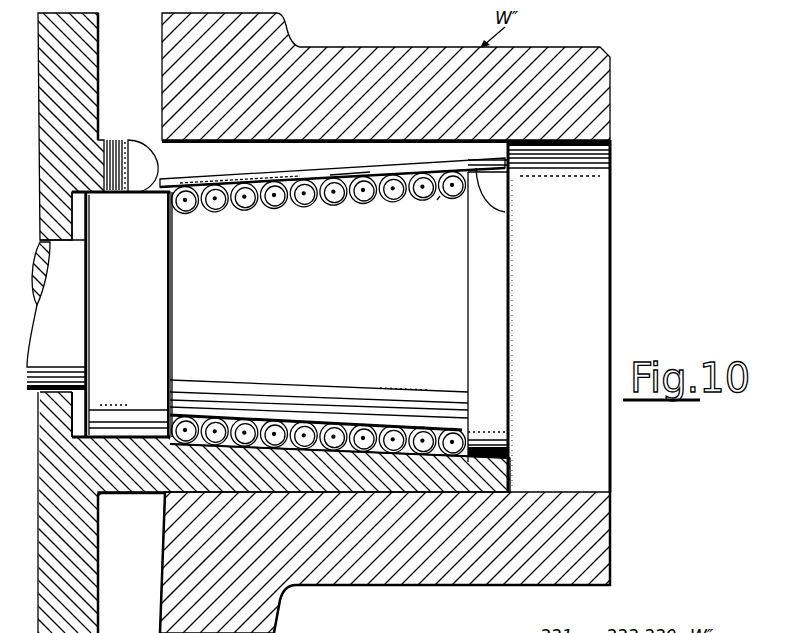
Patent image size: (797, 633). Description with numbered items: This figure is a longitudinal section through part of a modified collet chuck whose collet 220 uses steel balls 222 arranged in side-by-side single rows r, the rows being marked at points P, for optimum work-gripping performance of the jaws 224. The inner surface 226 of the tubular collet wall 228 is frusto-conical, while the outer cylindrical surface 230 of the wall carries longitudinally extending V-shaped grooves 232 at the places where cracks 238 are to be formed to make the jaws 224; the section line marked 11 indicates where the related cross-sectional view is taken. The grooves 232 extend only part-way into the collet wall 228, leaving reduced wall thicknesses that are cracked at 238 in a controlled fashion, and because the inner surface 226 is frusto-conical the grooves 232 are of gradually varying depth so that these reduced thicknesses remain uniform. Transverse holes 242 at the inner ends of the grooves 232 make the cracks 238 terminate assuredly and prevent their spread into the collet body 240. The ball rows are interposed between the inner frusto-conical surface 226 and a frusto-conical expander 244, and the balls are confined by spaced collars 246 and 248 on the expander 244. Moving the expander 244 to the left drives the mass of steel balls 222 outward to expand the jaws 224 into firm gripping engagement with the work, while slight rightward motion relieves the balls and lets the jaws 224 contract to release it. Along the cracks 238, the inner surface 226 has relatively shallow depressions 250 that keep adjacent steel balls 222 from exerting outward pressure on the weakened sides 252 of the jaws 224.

The collet 220 is at (104, 62).
The outer cylindrical surface 230 is at (160, 139).
The transverse holes 242 is at (133, 156).
The V-shaped grooves 232 is at (270, 167).
The section line 11 is at (335, 21).
The jaws 224 is at (497, 152).
The cracks 238 is at (505, 212).
The collar 248 is at (500, 284).
The frusto-conical expander 244 is at (352, 304).
The collar 246 is at (160, 325).
The steel balls 222 is at (333, 206).
The roller pressure points P is at (243, 202).
The shallow depressions 250 is at (350, 174).
The weakened sides 252 is at (438, 198).
The inner surface 226 is at (350, 424).
The tubular collet wall 228 is at (180, 465).
The collet body 240 is at (90, 571).